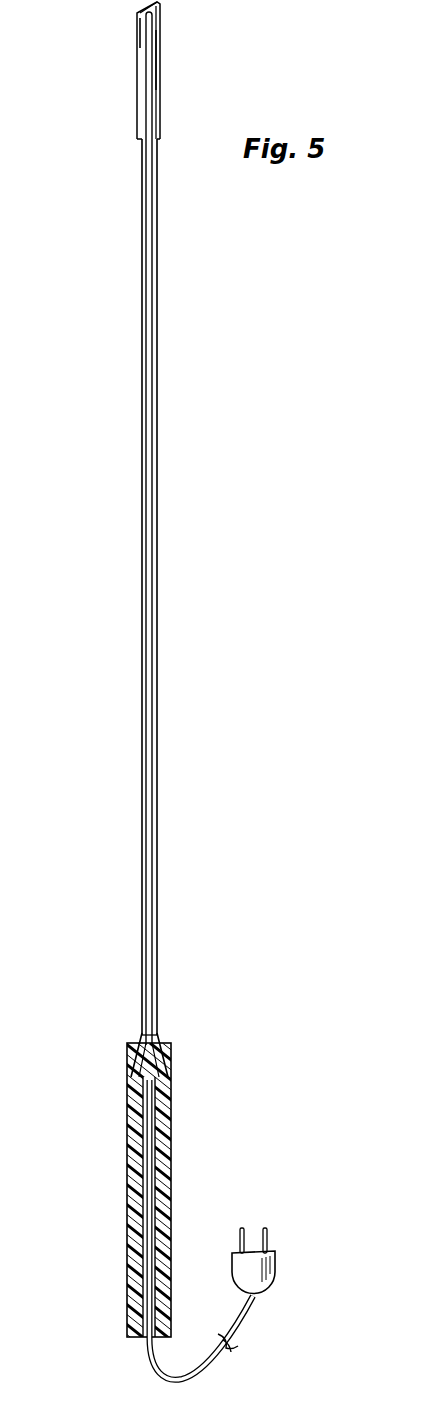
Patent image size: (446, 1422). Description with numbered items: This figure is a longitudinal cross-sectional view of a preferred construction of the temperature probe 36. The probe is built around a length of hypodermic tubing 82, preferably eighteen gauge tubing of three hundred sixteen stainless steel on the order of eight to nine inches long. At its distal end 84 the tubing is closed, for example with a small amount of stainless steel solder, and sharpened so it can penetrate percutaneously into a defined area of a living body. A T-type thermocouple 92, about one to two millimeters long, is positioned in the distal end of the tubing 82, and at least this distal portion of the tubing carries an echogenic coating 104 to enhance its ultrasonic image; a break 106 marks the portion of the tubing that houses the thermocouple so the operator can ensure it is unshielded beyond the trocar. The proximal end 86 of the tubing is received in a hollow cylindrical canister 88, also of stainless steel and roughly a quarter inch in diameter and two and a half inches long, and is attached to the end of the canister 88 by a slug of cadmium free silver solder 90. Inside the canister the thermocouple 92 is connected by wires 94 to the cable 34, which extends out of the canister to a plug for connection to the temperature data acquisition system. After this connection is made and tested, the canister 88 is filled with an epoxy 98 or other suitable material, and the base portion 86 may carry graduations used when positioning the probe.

The cable 34 is at (253, 1317).
The temperature probe 36 is at (145, 523).
The hypodermic tubing 82 is at (158, 593).
The distal end 84 is at (160, 22).
The proximal end 86 is at (157, 1012).
The canister 88 is at (172, 1100).
The silver solder 90 is at (140, 1040).
The thermocouple 92 is at (139, 41).
The wires 94 is at (150, 780).
The epoxy 98 is at (161, 1152).
The echogenic coating 104 is at (139, 98).
The break 106 is at (160, 58).